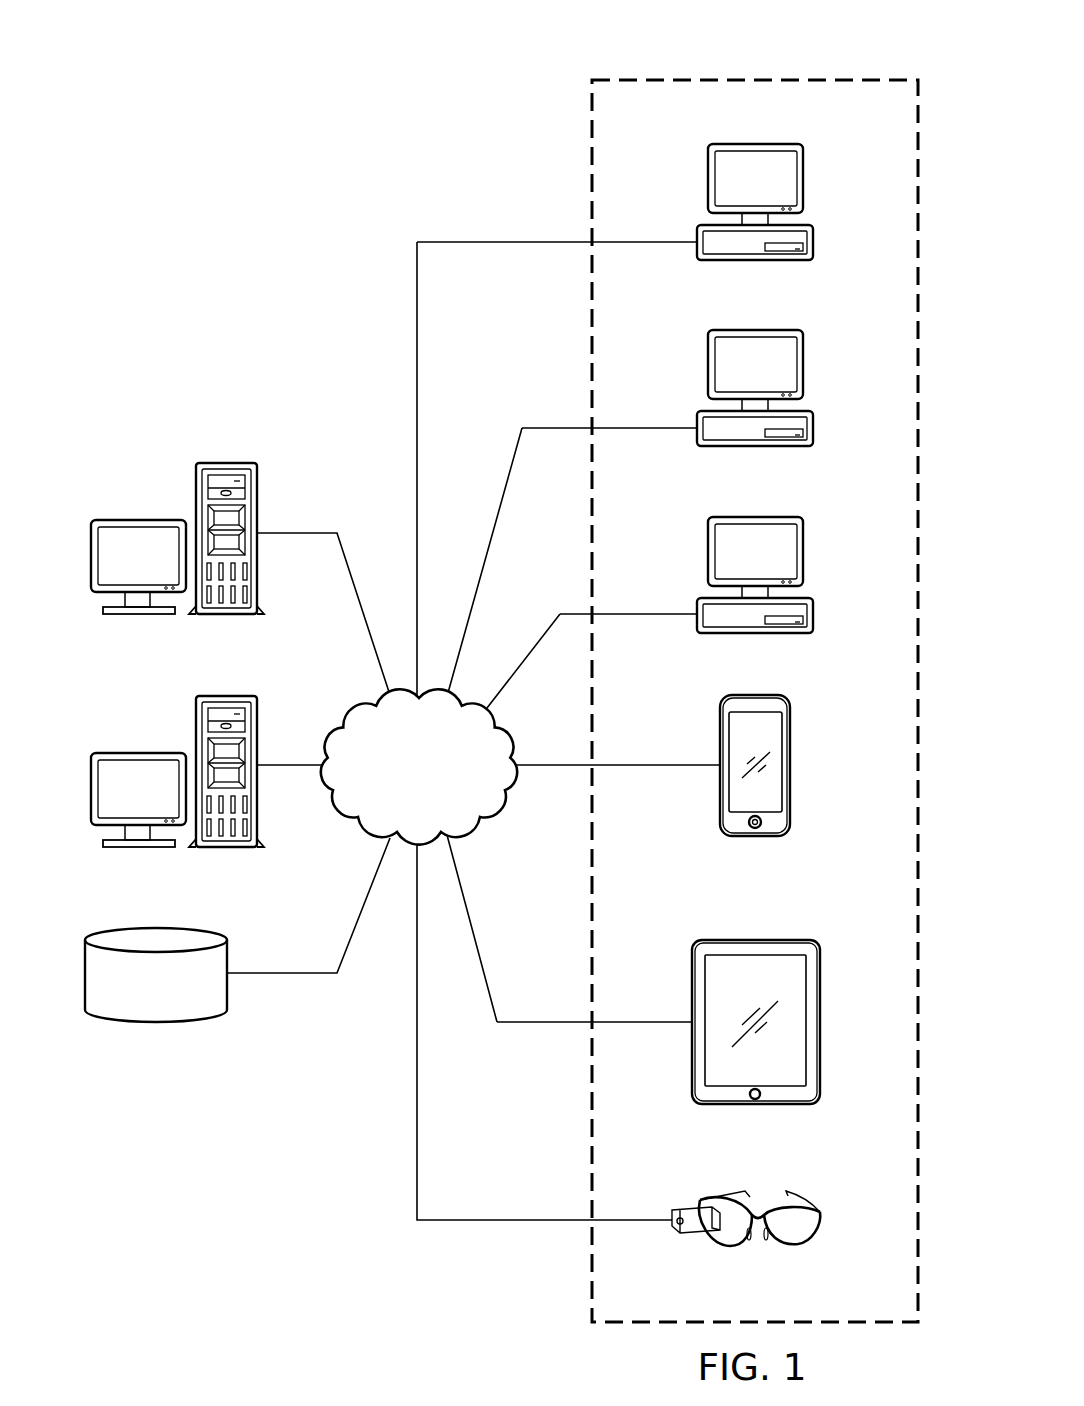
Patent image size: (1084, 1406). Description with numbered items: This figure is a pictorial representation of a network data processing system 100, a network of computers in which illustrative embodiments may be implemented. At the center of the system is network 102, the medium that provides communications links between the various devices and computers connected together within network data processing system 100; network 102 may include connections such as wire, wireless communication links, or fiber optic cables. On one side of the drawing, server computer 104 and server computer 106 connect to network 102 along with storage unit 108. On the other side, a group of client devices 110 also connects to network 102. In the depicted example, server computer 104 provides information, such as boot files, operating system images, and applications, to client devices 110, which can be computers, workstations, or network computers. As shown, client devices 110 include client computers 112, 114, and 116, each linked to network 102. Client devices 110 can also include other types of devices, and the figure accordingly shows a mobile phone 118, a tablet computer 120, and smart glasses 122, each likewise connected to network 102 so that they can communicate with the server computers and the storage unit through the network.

The network data processing system 100 is at (274, 326).
The network 102 is at (395, 798).
The server computer 104 is at (141, 520).
The server computer 106 is at (141, 753).
The storage unit 108 is at (157, 1023).
The client devices 110 is at (828, 70).
The client computer 112 is at (803, 178).
The client computer 114 is at (803, 364).
The client computer 116 is at (803, 551).
The mobile phone 118 is at (790, 783).
The tablet computer 120 is at (820, 1033).
The smart glasses 122 is at (822, 1222).